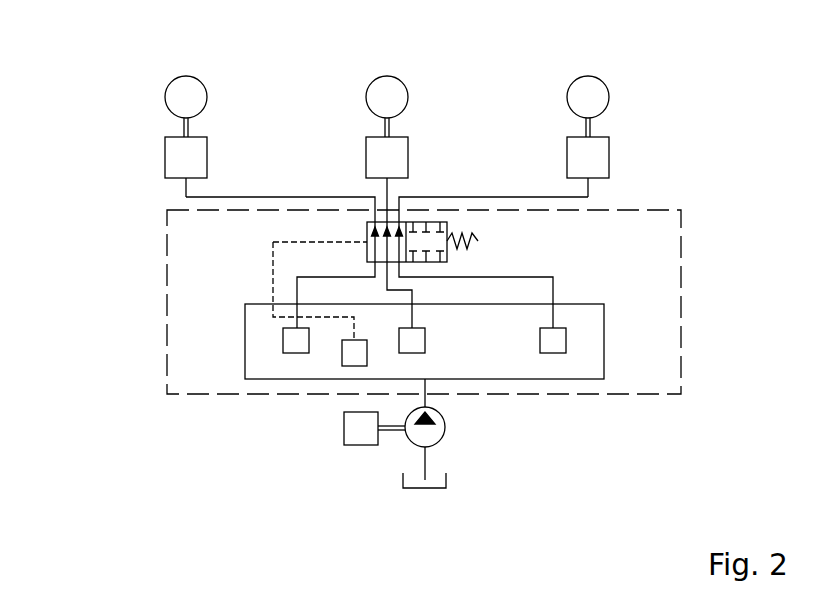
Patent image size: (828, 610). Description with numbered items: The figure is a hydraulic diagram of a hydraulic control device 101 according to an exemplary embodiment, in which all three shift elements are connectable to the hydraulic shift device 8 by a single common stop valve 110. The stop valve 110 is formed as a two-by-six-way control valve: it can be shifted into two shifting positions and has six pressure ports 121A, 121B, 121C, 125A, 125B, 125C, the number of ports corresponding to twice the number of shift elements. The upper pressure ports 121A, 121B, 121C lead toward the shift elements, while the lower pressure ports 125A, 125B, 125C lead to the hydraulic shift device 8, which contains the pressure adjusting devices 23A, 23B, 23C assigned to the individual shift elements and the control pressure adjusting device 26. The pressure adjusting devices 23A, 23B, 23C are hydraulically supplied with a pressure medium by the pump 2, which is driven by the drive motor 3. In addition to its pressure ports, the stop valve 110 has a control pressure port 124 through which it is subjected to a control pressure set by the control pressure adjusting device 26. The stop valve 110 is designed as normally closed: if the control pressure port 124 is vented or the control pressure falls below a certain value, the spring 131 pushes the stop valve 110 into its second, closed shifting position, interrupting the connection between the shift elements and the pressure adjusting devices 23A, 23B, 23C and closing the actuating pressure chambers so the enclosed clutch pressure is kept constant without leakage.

The hydraulic control device 101 is at (162, 250).
The stop valve 110 is at (441, 220).
The control pressure port 124 is at (265, 135).
The pressure port 121A is at (372, 220).
The pressure port 121B is at (388, 205).
The pressure port 121C is at (400, 218).
The spring 131 is at (478, 248).
The pressure port 125A is at (368, 266).
The pressure port 125B is at (392, 278).
The pressure port 125C is at (400, 268).
The hydraulic shift device 8 is at (457, 391).
The pressure adjusting device 23A is at (293, 340).
The pressure adjusting device 23B is at (415, 340).
The pressure adjusting device 23C is at (550, 340).
The control pressure adjusting device 26 is at (352, 357).
The pump 2 is at (418, 432).
The drive motor 3 is at (352, 430).